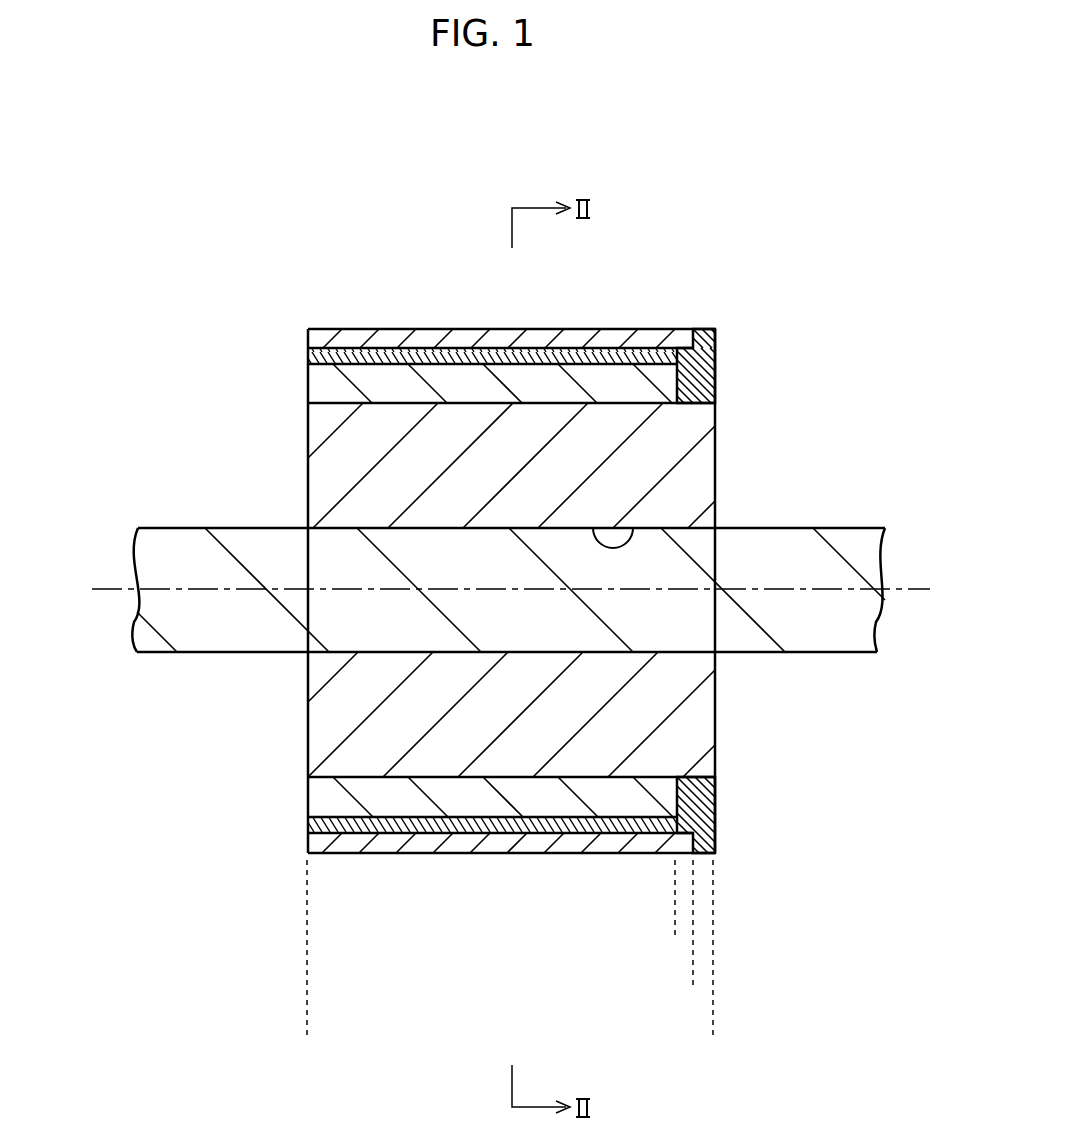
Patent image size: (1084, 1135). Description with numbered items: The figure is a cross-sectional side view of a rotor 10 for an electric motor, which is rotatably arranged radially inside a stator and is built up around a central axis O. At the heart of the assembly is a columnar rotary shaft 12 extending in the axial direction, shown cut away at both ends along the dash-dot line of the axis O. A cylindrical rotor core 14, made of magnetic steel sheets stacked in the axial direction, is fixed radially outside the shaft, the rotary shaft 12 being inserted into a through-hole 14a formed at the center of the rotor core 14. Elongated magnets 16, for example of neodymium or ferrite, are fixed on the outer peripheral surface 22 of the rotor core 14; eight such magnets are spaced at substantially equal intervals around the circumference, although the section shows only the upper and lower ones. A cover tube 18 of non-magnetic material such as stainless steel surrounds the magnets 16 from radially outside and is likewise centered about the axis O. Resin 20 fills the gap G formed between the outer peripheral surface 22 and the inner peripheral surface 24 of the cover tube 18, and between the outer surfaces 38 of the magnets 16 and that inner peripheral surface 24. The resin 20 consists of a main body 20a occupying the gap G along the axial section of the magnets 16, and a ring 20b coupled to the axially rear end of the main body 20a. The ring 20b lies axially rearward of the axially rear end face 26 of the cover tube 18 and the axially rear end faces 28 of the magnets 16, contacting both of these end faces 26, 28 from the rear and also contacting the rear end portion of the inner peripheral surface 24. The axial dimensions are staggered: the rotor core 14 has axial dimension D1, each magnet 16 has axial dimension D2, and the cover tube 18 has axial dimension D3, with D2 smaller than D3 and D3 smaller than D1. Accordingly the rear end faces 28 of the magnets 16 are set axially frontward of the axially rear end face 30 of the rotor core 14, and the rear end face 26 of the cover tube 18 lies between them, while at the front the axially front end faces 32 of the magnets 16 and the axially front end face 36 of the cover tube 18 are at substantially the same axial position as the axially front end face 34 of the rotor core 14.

The rotor 10 is at (751, 157).
The rotary shaft 12 is at (168, 543).
The rotor core 14 is at (322, 471).
The through-hole 14a is at (628, 528).
The magnet 16 is at (352, 372).
The cover tube 18 is at (525, 340).
The resin 20 is at (716, 810).
The main body 20a is at (522, 823).
The ring 20b is at (715, 342).
The outer peripheral surface 22 is at (592, 403).
The inner peripheral surface 24 is at (450, 356).
The axially rear end face 26 is at (700, 340).
The axially rear end face 28 is at (715, 376).
The axially rear end face 30 is at (715, 483).
The axially front end face 32 is at (307, 380).
The axially front end face 34 is at (307, 718).
The axially front end face 36 is at (307, 339).
The outer surface 38 is at (365, 373).
The gap G is at (618, 825).
The axis O is at (100, 589).
The axial dimension of rotor core D1 is at (696, 1033).
The axial dimension of magnet D2 is at (658, 937).
The axial dimension of cover tube D3 is at (676, 984).